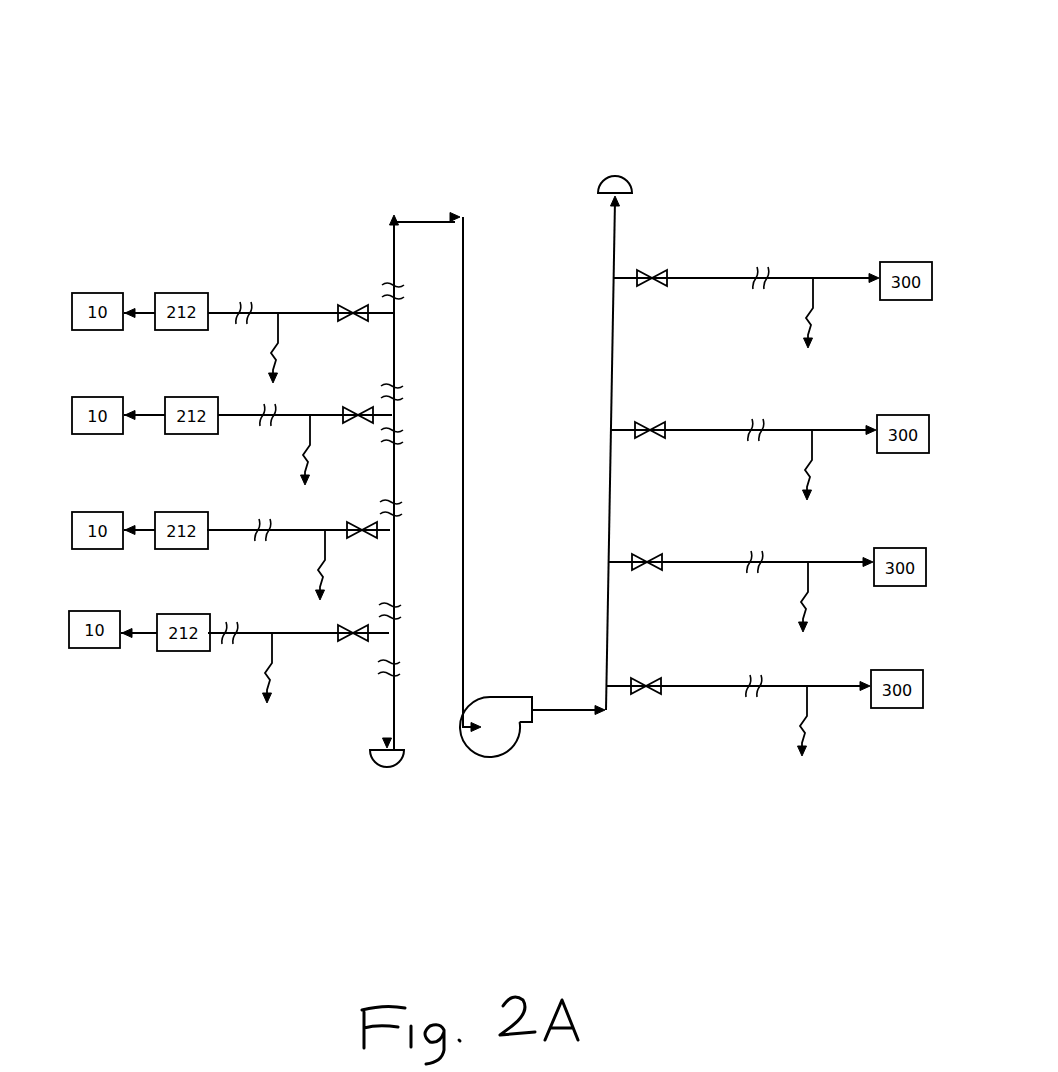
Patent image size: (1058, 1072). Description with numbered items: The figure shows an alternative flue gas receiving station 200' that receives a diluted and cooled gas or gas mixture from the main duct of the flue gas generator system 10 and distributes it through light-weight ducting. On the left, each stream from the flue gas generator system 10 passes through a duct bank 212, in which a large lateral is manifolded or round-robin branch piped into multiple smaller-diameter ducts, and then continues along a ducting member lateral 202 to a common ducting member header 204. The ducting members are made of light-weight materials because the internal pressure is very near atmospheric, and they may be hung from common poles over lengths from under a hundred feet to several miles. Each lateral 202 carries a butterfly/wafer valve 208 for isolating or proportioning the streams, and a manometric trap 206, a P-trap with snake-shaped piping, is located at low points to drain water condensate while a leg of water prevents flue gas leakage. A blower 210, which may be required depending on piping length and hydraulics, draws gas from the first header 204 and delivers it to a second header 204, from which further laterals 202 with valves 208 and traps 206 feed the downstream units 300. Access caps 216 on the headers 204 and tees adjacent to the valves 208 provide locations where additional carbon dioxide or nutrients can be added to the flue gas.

The flue gas receiving station 200' is at (530, 56).
The flue gas generator system 10 is at (117, 470).
The duct bank 212 is at (186, 472).
The ducting member lateral 202 is at (266, 309).
The butterfly/wafer valve 208 is at (344, 305).
The manometric trap 206 is at (275, 373).
The ducting member header 204 is at (398, 337).
The destination unit 300 is at (901, 485).
The access cap 216 is at (368, 763).
The blower 210 is at (469, 752).